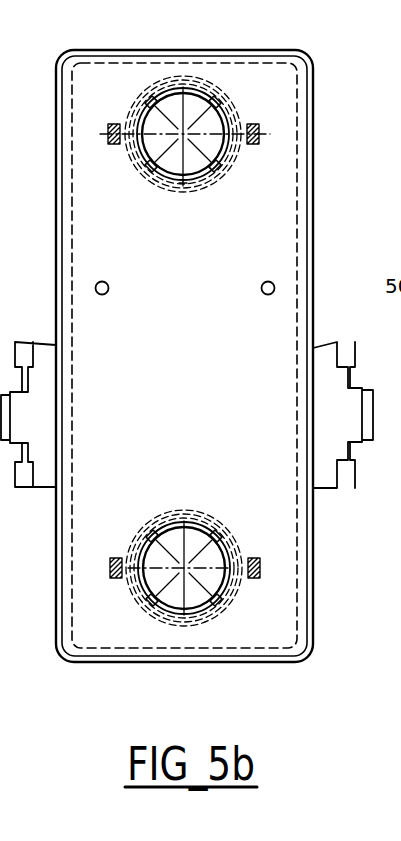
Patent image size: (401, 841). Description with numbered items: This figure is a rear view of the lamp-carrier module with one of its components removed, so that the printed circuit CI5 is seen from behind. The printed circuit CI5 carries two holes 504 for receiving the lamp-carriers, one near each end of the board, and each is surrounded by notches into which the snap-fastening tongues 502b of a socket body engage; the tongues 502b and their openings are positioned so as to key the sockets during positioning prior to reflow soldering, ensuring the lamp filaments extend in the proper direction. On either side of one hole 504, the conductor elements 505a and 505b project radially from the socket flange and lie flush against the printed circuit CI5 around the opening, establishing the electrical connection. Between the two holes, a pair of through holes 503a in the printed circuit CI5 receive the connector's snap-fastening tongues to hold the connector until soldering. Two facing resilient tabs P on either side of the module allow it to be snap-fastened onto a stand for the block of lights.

The snap-fastening tongues 502b is at (218, 180).
The through holes 503a is at (258, 290).
The holes for receiving the lamp-carriers 504 is at (175, 107).
The conductor element 505a is at (118, 556).
The conductor element 505b is at (258, 553).
The printed circuit CI5 is at (278, 545).
The resilient tabs P is at (42, 428).